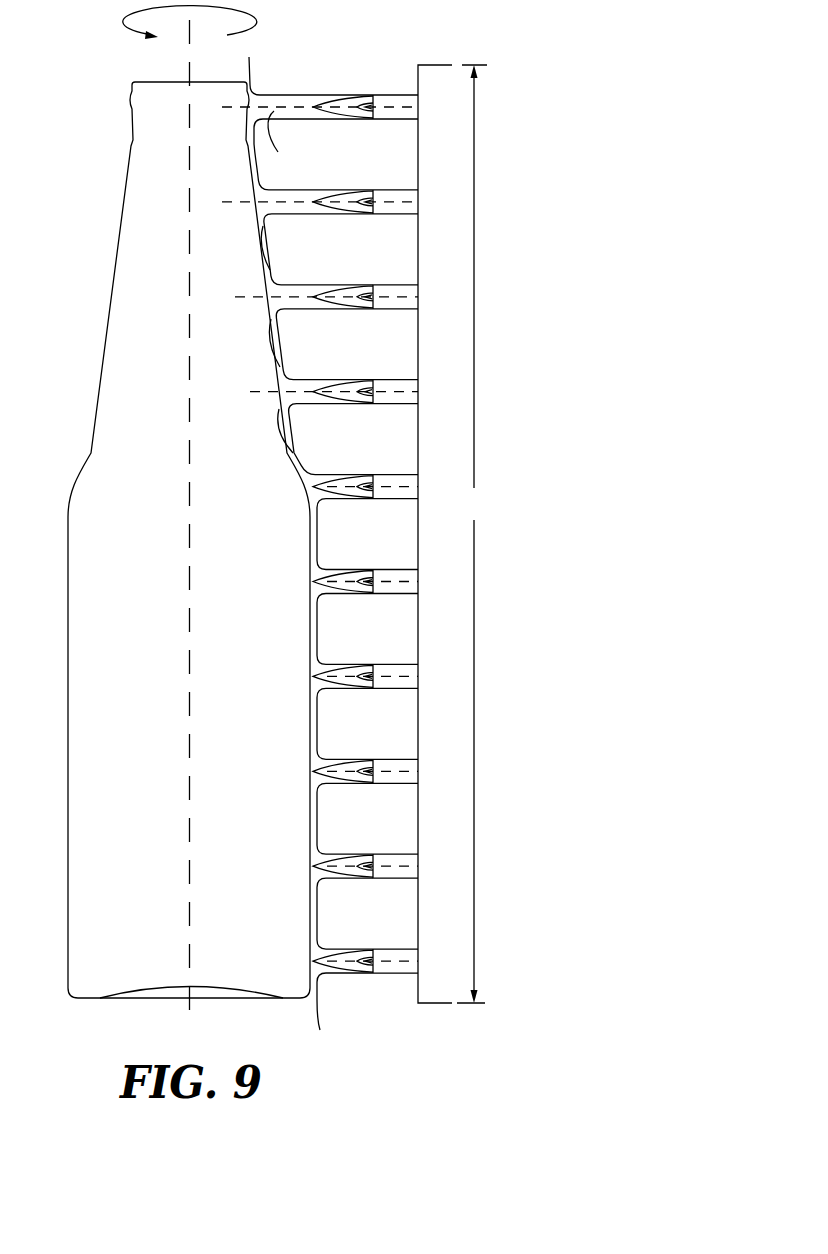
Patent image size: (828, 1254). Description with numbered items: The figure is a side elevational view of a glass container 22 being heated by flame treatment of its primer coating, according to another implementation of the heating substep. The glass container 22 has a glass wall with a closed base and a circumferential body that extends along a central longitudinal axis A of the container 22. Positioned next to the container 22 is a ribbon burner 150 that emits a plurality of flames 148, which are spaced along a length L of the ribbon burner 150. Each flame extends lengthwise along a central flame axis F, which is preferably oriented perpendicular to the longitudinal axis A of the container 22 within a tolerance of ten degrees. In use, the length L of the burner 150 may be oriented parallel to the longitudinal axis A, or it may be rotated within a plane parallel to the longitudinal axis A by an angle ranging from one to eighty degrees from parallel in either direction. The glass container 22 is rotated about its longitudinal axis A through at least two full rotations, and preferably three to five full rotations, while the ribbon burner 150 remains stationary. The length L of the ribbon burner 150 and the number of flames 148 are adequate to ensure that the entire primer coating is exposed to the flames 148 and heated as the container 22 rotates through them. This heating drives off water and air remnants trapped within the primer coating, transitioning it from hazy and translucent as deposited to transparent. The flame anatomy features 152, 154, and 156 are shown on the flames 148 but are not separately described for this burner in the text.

The glass container 22 is at (86, 220).
The central longitudinal axis A is at (188, 531).
The central flame axis F is at (293, 105).
The flames 148 is at (321, 95).
The ribbon burner 150 is at (433, 82).
The nozzle orifice 152 is at (367, 116).
The fluid jet 154 is at (336, 109).
The fluid film on container surface 156 is at (293, 146).
The length of the ribbon burner L is at (472, 534).